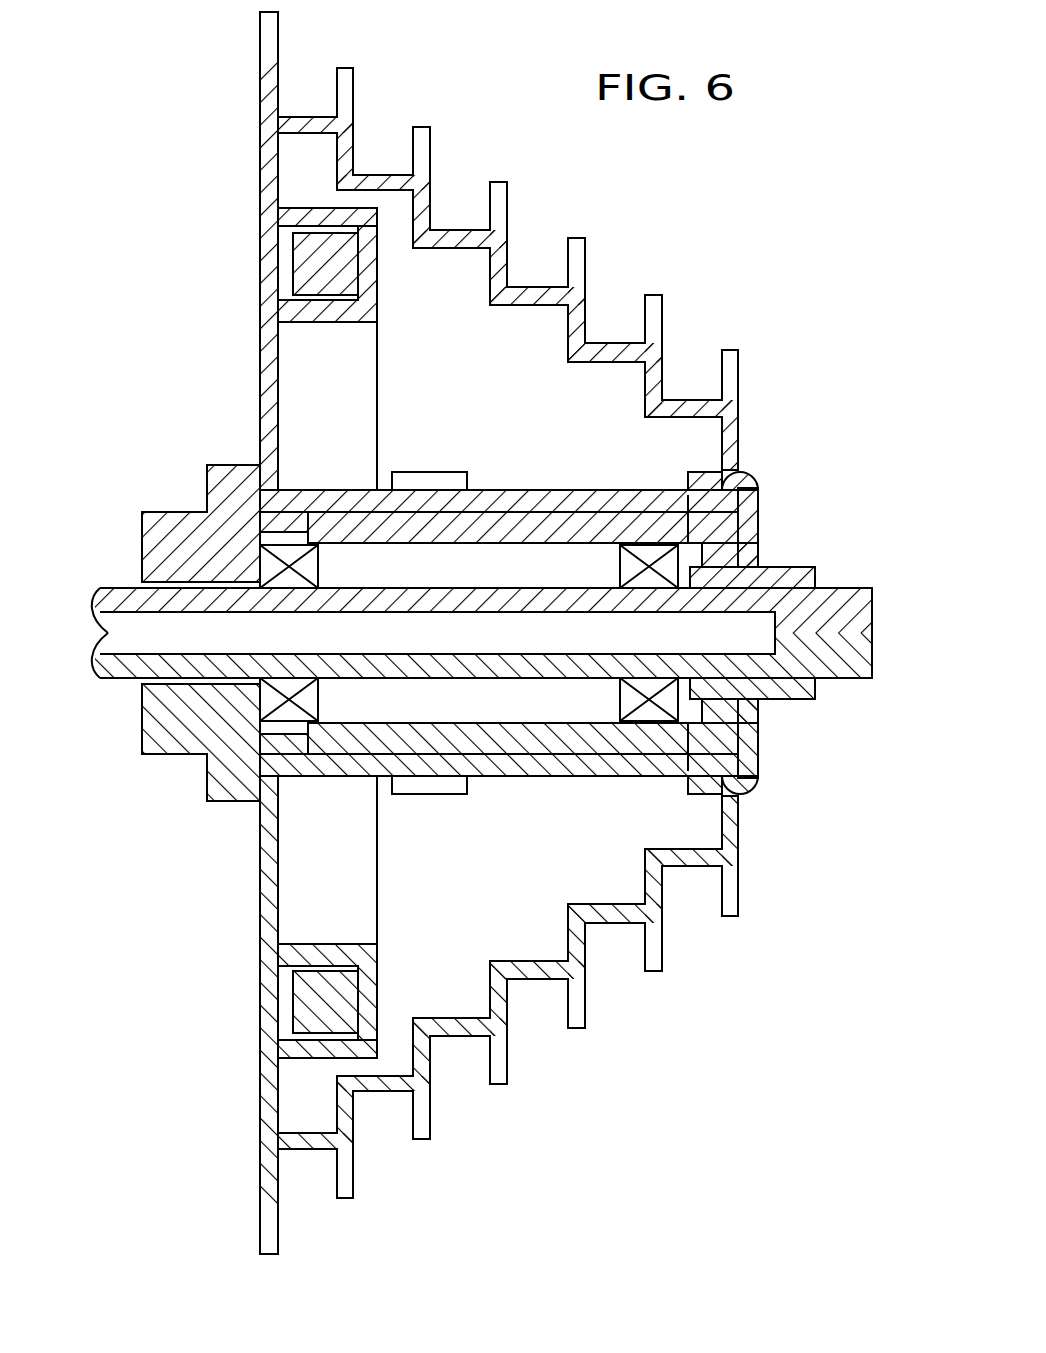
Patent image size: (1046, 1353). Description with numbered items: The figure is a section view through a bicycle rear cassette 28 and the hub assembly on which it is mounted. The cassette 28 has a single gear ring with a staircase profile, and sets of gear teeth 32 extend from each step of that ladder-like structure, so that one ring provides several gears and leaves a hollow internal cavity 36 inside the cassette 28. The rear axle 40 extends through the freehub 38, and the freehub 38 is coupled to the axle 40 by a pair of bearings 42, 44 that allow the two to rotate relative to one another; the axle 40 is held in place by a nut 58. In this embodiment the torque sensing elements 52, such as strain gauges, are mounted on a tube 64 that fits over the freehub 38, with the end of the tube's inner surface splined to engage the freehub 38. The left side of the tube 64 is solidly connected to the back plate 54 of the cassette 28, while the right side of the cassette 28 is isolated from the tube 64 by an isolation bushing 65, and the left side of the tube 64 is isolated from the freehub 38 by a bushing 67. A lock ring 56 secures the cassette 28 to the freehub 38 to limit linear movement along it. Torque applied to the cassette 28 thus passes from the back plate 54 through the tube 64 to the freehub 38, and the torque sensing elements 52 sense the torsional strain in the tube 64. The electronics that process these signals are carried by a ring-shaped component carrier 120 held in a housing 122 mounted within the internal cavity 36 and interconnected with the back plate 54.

The cassette 28 is at (838, 265).
The gear teeth 32 is at (503, 200).
The internal cavity 36 is at (596, 435).
The freehub 38 is at (160, 515).
The axle 40 is at (115, 636).
The bearing 42 is at (320, 565).
The bearing 44 is at (620, 568).
The torque sensing element 52 is at (405, 478).
The back plate 54 is at (268, 185).
The lock ring 56 is at (750, 520).
The nut 58 is at (873, 668).
The tube 64 is at (625, 490).
The isolation bushing 65 is at (752, 485).
The bushing 67 is at (240, 470).
The component carrier 120 is at (311, 608).
The housing 122 is at (302, 208).